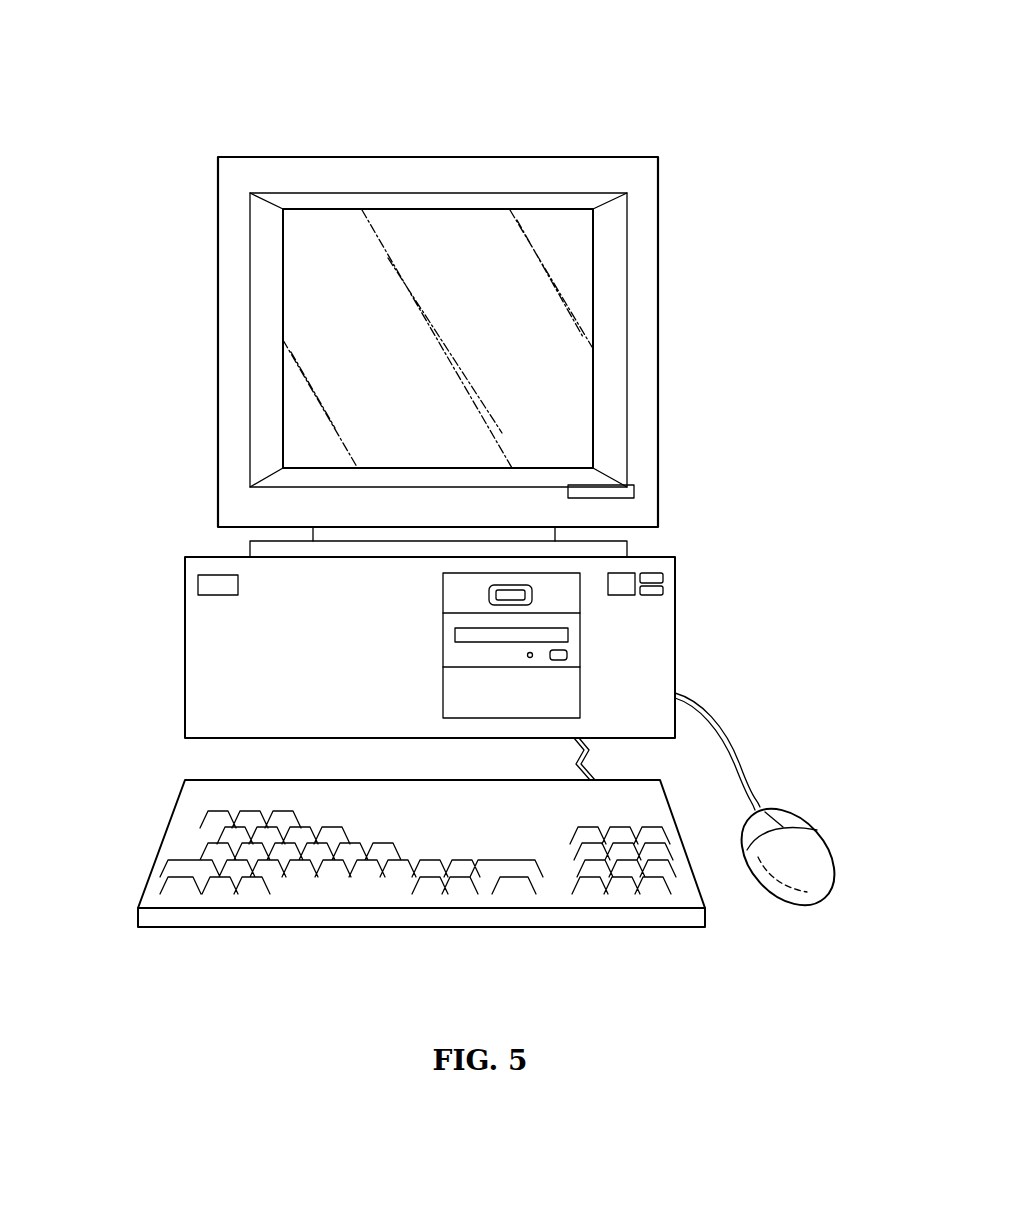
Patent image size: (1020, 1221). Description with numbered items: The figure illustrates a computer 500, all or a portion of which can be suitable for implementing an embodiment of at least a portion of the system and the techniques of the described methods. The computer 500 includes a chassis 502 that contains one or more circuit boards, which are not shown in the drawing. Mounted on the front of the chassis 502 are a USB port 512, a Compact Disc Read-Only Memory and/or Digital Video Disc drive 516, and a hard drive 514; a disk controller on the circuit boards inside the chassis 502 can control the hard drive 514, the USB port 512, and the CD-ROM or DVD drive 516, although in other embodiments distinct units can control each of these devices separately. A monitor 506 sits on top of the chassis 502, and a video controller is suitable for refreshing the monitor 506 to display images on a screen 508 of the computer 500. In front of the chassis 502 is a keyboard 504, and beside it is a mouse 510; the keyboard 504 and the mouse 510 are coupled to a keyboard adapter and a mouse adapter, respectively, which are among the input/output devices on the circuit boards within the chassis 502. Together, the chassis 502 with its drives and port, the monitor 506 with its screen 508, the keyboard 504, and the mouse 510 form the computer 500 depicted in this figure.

The computer 500 is at (650, 130).
The chassis 502 is at (183, 649).
The keyboard 504 is at (166, 837).
The monitor 506 is at (308, 155).
The screen 508 is at (340, 345).
The mouse 510 is at (812, 843).
The USB port 512 is at (536, 591).
The hard drive 514 is at (568, 692).
The CD-ROM and/or DVD drive 516 is at (570, 642).